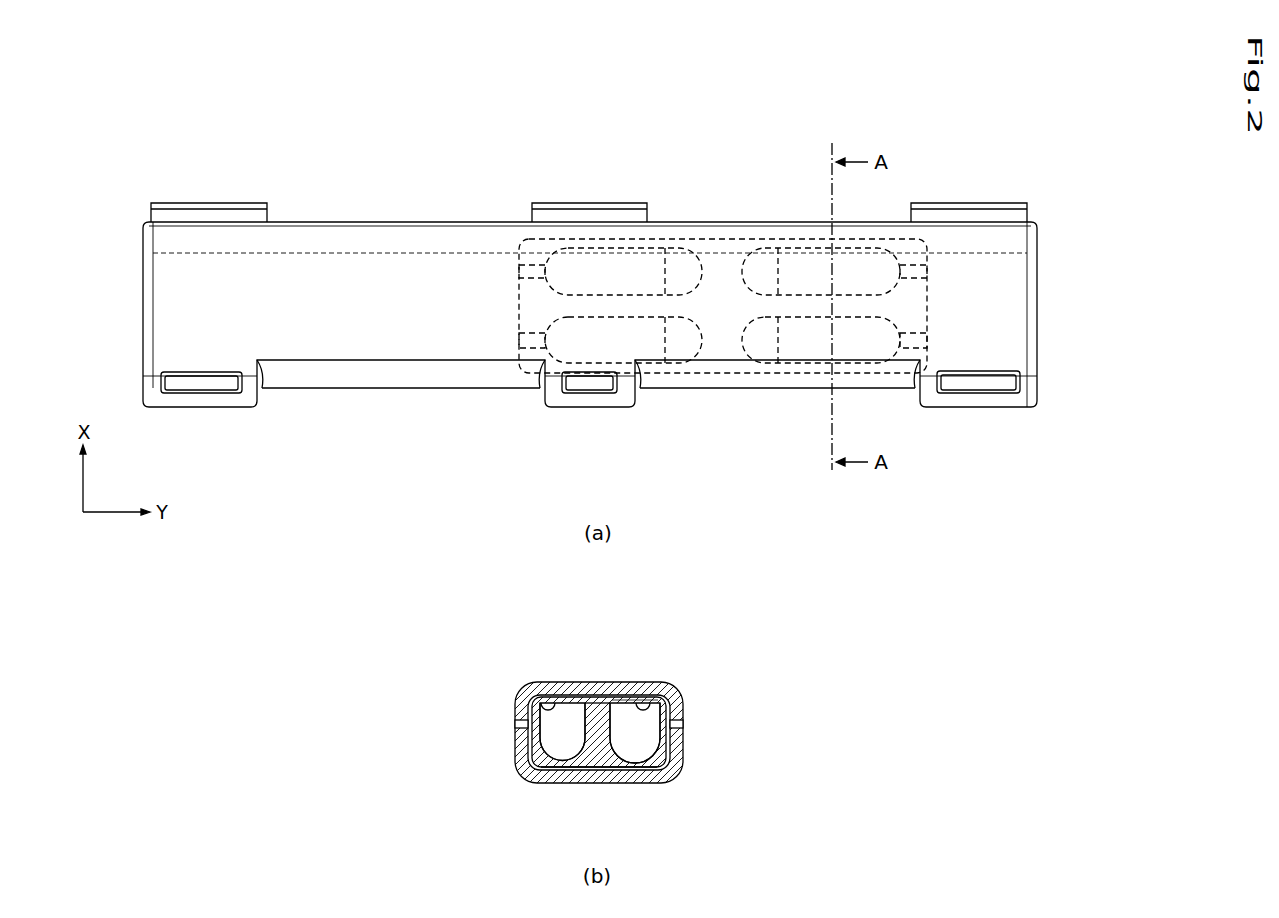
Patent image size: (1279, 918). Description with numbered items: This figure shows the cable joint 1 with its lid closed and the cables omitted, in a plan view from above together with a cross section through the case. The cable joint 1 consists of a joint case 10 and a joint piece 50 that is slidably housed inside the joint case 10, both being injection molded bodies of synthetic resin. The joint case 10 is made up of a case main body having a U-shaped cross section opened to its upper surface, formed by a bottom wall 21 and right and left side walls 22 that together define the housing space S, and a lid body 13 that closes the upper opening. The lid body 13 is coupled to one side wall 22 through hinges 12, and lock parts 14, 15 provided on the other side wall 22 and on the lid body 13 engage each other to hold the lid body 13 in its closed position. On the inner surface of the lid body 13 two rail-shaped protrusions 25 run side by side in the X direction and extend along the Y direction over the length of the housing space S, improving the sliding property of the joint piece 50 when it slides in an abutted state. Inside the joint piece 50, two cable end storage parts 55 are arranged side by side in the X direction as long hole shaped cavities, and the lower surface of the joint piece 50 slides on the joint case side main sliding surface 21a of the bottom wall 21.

The cable joint 1 is at (657, 180).
The joint case 10 is at (709, 208).
The hinges 12 is at (211, 203).
The lid body 13 is at (380, 268).
The lock part 14 is at (590, 408).
The lock part 15 is at (208, 395).
The bottom wall 21 is at (587, 785).
The joint case side main sliding surface 21a is at (620, 772).
The side walls 22 is at (515, 725).
The rail-shaped protrusions 25 is at (542, 697).
The joint piece 50 is at (720, 356).
The cable end storage parts 55 is at (558, 742).
The housing space S is at (622, 703).